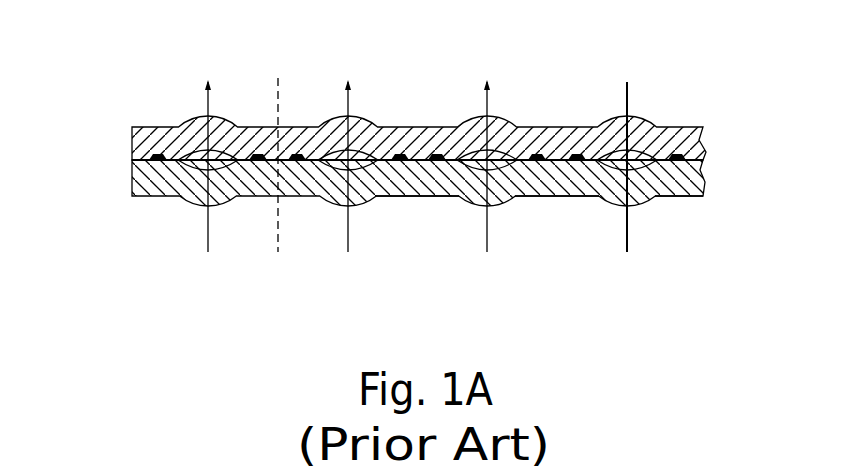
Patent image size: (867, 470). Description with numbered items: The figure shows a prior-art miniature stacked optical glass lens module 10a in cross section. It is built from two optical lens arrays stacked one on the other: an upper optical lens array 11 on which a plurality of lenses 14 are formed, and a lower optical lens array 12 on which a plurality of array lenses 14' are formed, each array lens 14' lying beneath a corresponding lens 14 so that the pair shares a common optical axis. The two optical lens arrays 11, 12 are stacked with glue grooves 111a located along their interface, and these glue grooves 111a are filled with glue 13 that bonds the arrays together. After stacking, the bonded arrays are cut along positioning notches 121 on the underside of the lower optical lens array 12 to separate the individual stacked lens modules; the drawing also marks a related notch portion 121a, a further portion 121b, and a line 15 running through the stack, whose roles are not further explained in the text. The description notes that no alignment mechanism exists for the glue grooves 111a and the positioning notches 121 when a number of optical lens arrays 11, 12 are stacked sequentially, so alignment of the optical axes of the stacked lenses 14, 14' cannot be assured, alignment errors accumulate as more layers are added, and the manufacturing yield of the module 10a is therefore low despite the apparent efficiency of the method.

The miniature stacked optical glass lens module 10a is at (116, 64).
The optical lens array 11 is at (688, 140).
The optical lens array 12 is at (688, 178).
The glue grooves 111a is at (296, 152).
The glue 13 is at (437, 152).
The lenses 14 is at (432, 135).
The array lenses 14' is at (401, 243).
The bending line 15 is at (281, 180).
The light emitting units 121a is at (558, 198).
The flat portions of lower layer 121b is at (415, 198).
The positioning notches 121 is at (697, 197).